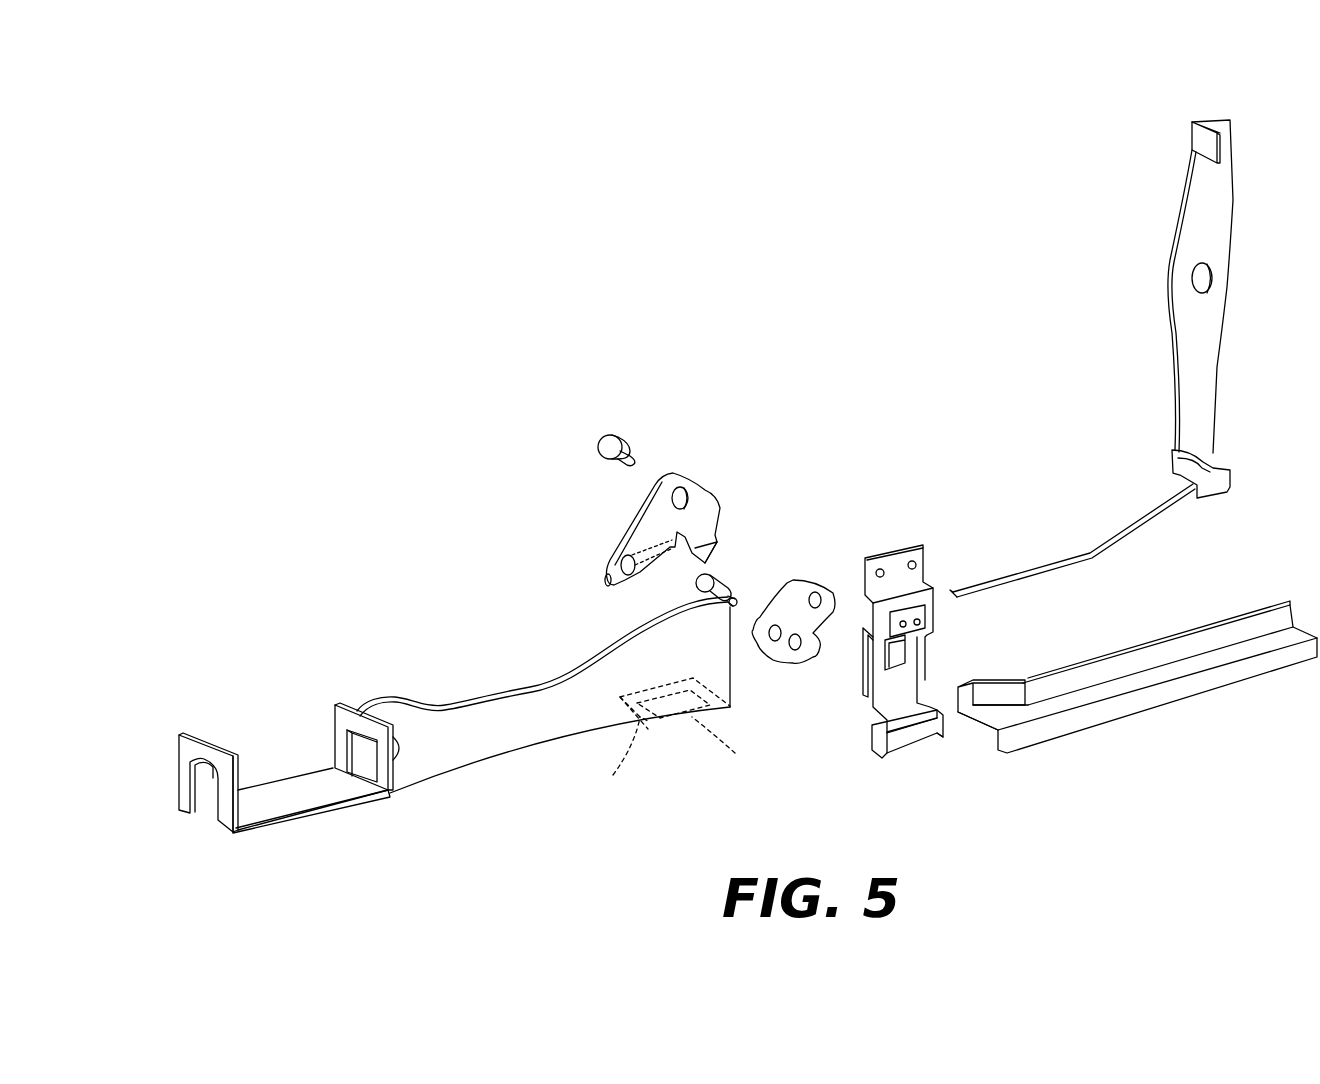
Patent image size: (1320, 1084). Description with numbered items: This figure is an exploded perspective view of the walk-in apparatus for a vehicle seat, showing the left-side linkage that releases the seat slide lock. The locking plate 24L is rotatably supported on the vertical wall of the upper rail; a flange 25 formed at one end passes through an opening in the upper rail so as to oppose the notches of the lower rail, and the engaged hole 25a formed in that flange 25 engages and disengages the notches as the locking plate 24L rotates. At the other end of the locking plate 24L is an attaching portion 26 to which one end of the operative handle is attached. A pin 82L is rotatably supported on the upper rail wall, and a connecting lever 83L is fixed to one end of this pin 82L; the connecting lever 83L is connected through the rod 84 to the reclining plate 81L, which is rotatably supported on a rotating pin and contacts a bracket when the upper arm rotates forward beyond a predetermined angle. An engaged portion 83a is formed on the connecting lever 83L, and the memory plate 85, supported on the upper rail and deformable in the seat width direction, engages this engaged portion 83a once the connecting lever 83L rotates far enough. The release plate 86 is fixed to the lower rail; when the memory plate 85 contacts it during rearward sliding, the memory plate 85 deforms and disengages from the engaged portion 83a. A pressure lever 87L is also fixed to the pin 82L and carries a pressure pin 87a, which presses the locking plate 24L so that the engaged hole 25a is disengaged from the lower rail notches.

The locking plate 24L is at (482, 772).
The flange 25 is at (675, 717).
The engaged hole 25a is at (667, 755).
The attaching portion 26 is at (300, 800).
The reclining plate 81L is at (1212, 333).
The pin 82L is at (623, 435).
The connecting lever 83L is at (703, 502).
The engaged portion 83a is at (720, 550).
The rod 84 is at (1053, 555).
The memory plate 85 is at (903, 602).
The release plate 86 is at (1190, 693).
The pressure lever 87L is at (817, 648).
The pressure pin 87a is at (713, 580).